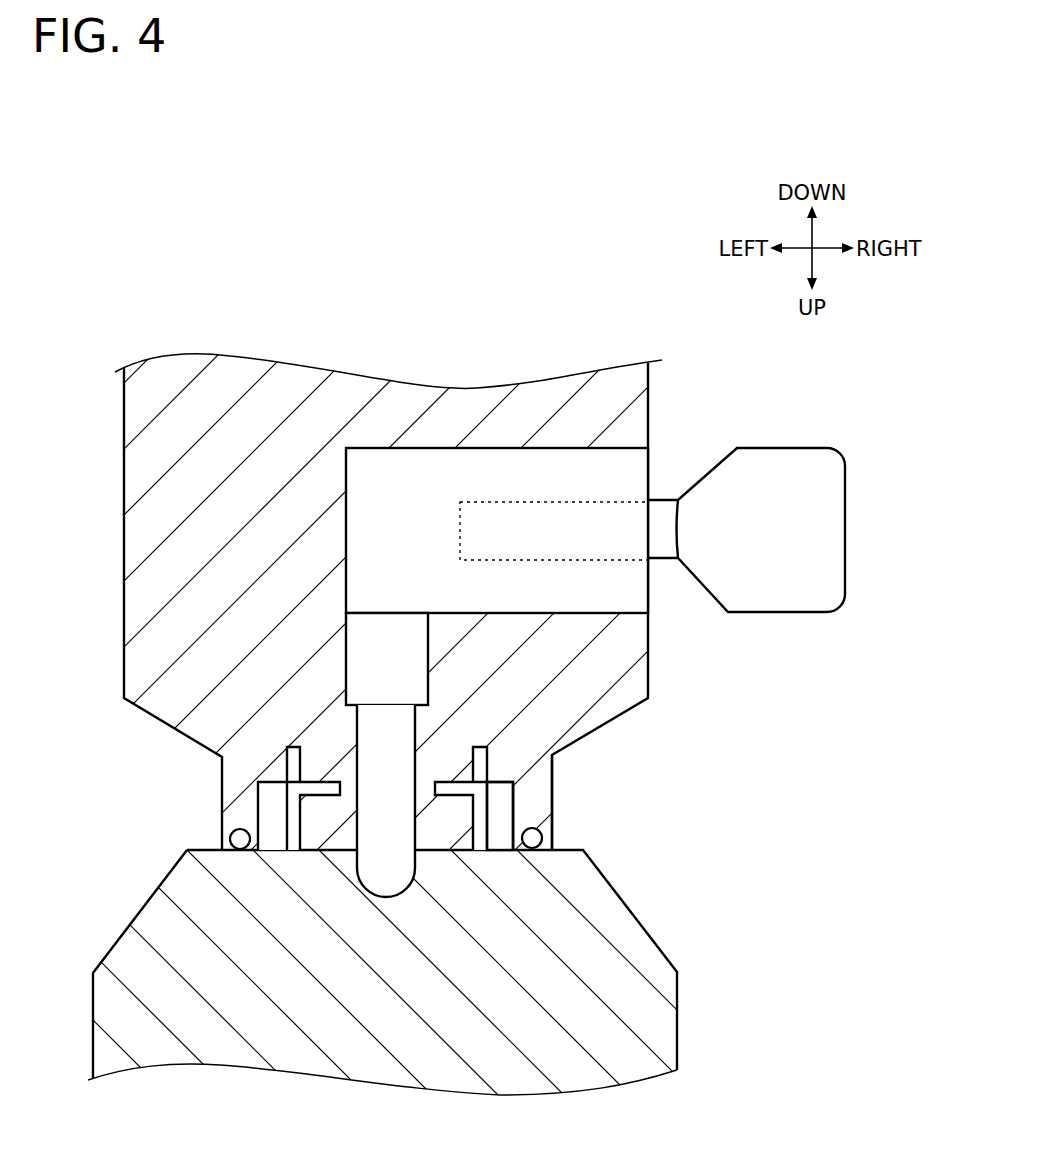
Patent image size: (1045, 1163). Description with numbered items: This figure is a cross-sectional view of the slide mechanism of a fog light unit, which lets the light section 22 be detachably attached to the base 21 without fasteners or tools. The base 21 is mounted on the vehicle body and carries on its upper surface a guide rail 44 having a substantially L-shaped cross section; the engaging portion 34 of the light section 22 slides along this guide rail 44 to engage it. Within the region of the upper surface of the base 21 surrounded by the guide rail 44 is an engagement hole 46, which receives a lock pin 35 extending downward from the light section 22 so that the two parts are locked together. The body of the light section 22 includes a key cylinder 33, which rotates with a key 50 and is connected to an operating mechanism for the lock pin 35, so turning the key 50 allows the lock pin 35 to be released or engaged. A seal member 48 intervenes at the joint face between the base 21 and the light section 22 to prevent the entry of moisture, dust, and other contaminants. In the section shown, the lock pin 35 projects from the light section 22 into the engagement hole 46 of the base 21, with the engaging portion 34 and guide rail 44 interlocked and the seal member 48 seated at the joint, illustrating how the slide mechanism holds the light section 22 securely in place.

The base 21 is at (640, 920).
The light section 22 is at (648, 653).
The key cylinder 33 is at (632, 468).
The engaging portion 34 is at (542, 780).
The lock pin 35 is at (373, 733).
The guide rail 44 is at (503, 813).
The engagement hole 46 is at (377, 887).
The seal member 48 is at (240, 839).
The key 50 is at (812, 523).